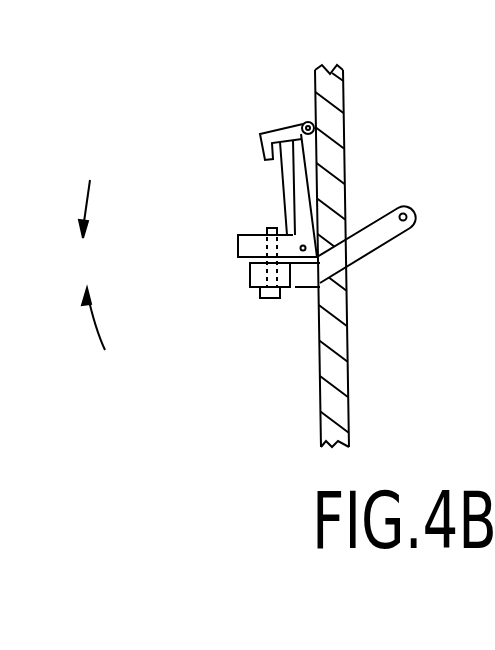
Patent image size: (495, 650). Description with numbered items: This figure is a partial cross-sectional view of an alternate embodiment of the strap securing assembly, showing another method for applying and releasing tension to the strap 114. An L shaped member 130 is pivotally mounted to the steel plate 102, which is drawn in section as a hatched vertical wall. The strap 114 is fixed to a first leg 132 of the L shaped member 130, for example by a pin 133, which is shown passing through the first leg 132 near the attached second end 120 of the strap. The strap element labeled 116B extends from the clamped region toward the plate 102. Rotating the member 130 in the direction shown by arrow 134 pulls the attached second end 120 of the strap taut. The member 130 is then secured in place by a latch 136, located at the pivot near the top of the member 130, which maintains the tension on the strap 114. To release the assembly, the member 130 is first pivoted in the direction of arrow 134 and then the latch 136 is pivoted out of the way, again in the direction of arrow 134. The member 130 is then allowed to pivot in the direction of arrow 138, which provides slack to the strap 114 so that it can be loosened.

The steel plate 102 is at (336, 90).
The strap 114 is at (409, 228).
The flattened tube end 116B is at (343, 262).
The second end of the strap 120 is at (291, 280).
The L shaped member 130 is at (294, 188).
The first leg 132 is at (246, 245).
The pin 133 is at (268, 228).
The arrow 134 is at (96, 320).
The latch 136 is at (270, 130).
The arrow 138 is at (88, 202).